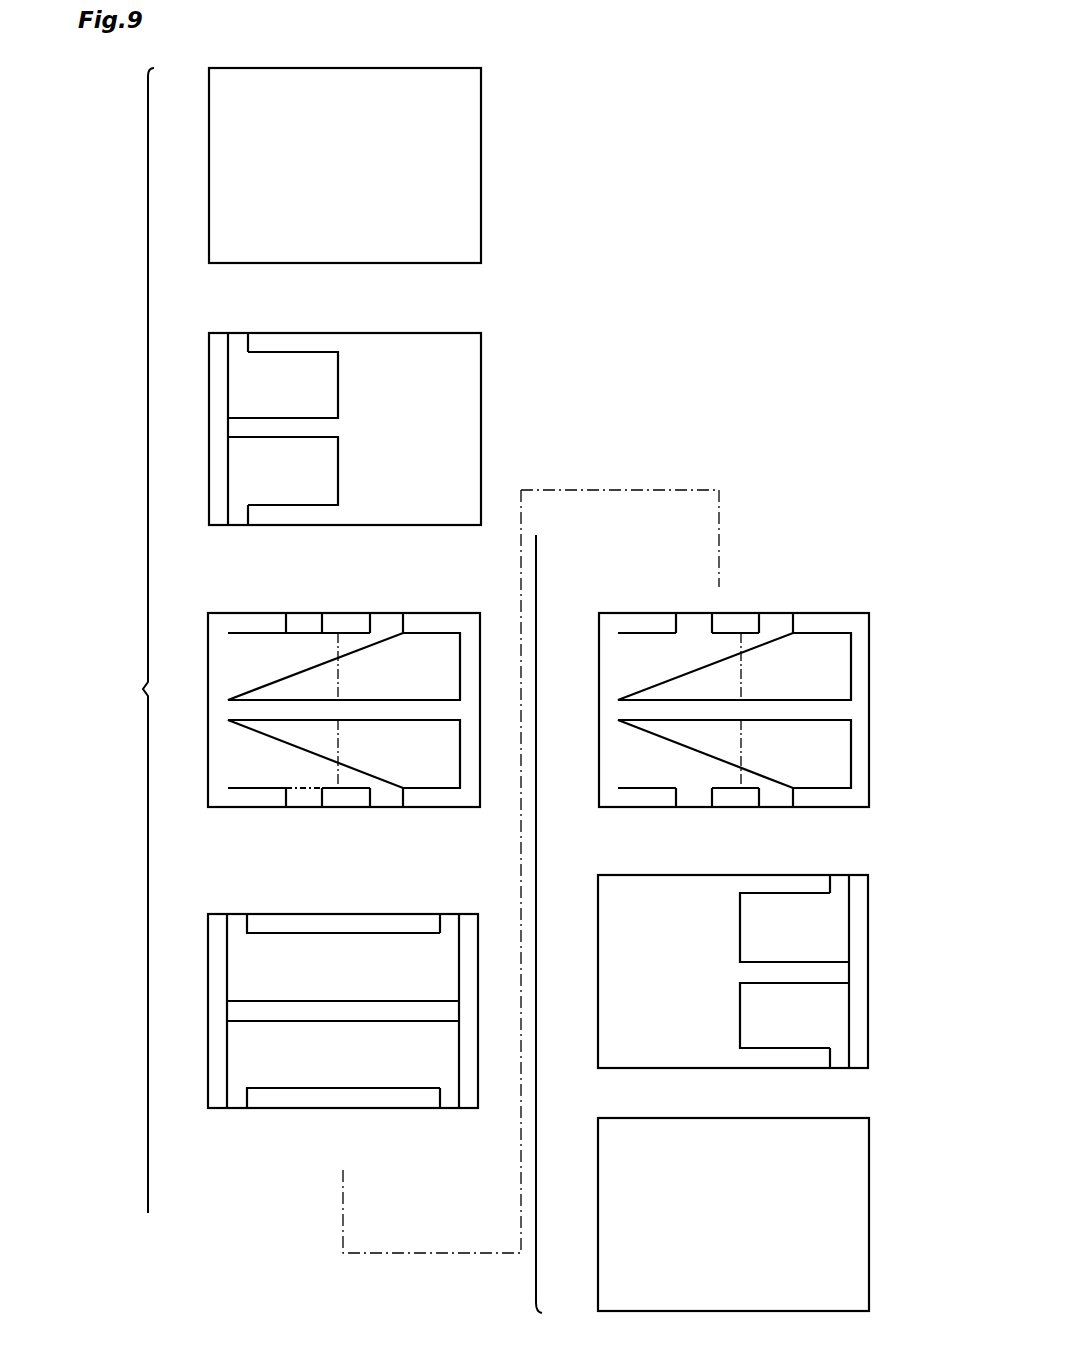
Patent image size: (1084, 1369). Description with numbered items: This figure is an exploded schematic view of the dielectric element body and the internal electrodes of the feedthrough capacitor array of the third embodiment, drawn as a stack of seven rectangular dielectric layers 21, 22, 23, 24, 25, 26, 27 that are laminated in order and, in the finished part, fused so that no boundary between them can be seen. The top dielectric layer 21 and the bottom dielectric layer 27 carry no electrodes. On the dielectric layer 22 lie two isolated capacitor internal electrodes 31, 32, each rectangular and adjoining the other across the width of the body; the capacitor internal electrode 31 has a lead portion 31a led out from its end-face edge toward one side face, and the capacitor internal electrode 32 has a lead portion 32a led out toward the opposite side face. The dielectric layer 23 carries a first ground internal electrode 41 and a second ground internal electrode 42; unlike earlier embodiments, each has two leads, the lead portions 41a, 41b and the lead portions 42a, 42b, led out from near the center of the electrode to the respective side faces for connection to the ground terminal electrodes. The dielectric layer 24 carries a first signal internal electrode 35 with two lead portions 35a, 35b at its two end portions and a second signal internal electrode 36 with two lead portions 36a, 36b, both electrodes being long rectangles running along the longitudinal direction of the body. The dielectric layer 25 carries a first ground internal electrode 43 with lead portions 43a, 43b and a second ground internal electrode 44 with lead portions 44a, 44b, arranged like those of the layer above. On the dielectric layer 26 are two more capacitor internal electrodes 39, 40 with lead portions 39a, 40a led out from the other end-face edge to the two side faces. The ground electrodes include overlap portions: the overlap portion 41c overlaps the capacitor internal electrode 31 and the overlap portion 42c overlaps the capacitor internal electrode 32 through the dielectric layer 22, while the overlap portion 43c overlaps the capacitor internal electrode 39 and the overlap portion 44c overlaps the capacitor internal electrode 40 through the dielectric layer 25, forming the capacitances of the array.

The dielectric layer 21 is at (484, 103).
The dielectric layer 22 is at (484, 360).
The dielectric layer 23 is at (481, 655).
The dielectric layer 24 is at (481, 955).
The dielectric layer 25 is at (597, 643).
The dielectric layer 26 is at (597, 905).
The dielectric layer 27 is at (597, 1158).
The capacitor internal electrode 31 is at (237, 393).
The lead portion 31a is at (237, 348).
The capacitor internal electrode 32 is at (237, 473).
The lead portion 32a is at (237, 515).
The first signal internal electrode 35 is at (237, 969).
The lead portion 35a is at (238, 922).
The lead portion 35b is at (450, 922).
The second signal internal electrode 36 is at (237, 1054).
The lead portion 36a is at (237, 1097).
The lead portion 36b is at (450, 1097).
The capacitor internal electrode 39 is at (800, 937).
The lead portion 39a is at (840, 890).
The capacitor internal electrode 40 is at (800, 1013).
The lead portion 40a is at (840, 1058).
The first ground internal electrode 41 is at (237, 643).
The lead portion 41a is at (303, 622).
The lead portion 41b is at (385, 622).
The overlap portion 41c is at (278, 676).
The second ground internal electrode 42 is at (237, 737).
The lead portion 42a is at (302, 797).
The lead portion 42b is at (388, 797).
The overlap portion 42c is at (278, 766).
The first ground internal electrode 43 is at (846, 678).
The lead portion 43a is at (693, 620).
The lead portion 43b is at (778, 620).
The overlap portion 43c is at (836, 651).
The second ground internal electrode 44 is at (846, 765).
The lead portion 44a is at (690, 800).
The lead portion 44b is at (778, 800).
The overlap portion 44c is at (836, 742).